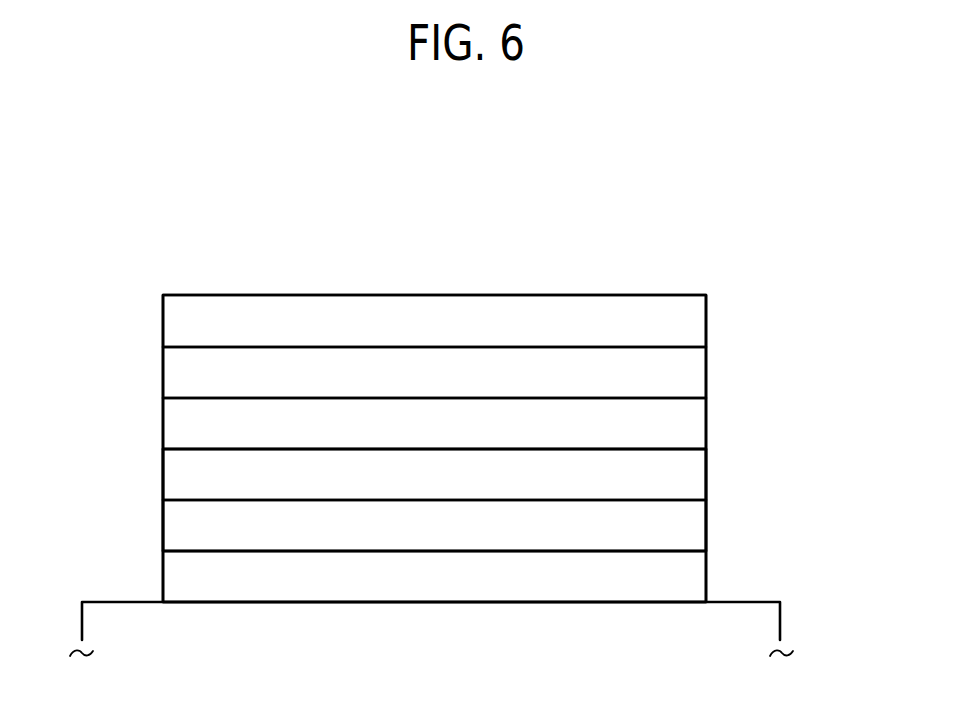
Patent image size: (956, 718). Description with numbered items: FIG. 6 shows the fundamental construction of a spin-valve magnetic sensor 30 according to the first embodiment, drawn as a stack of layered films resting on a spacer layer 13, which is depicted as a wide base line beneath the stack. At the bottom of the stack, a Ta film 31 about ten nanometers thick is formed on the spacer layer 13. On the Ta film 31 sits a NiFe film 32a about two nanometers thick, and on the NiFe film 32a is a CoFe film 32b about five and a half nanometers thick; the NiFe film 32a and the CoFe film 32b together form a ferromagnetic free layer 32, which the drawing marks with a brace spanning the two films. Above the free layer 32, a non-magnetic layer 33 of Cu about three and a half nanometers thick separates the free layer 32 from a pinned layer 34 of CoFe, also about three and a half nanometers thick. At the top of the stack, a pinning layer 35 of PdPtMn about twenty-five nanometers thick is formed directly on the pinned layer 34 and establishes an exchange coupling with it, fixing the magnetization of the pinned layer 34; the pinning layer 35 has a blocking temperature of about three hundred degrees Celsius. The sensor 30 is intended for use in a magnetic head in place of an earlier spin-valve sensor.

The spin-valve magnetic sensor 30 is at (514, 209).
The pinning layer 35 is at (687, 329).
The pinned layer 34 is at (687, 381).
The non-magnetic layer 33 is at (687, 433).
The ferromagnetic free layer 32 is at (725, 453).
The CoFe film 32b is at (175, 476).
The NiFe film 32a is at (182, 527).
The Ta film 31 is at (685, 583).
The spacer layer 13 is at (781, 617).